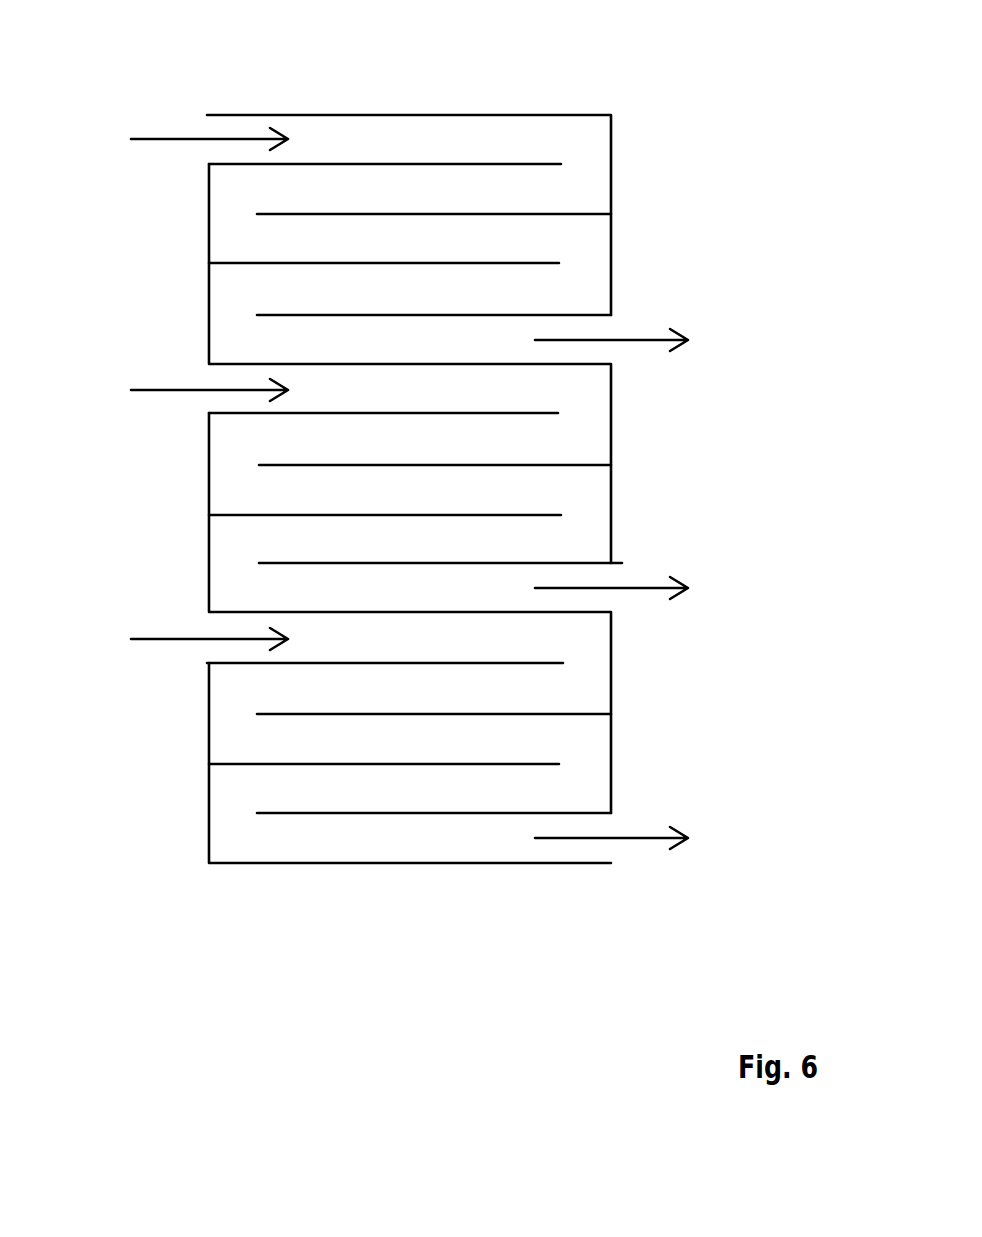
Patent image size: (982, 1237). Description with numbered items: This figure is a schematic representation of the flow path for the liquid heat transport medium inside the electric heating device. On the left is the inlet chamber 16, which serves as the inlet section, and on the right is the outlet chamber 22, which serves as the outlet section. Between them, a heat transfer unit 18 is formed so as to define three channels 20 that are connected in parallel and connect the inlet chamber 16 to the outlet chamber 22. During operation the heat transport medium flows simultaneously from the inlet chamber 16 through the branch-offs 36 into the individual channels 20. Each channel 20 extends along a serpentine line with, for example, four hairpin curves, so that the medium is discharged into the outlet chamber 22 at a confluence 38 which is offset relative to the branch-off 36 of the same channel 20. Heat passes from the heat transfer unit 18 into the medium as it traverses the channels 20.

The inlet chamber 16 is at (83, 488).
The heat transfer unit 18 is at (372, 114).
The channels 20 is at (497, 137).
The outlet chamber 22 is at (863, 512).
The branch-offs 36 is at (208, 127).
The confluences 38 is at (603, 324).